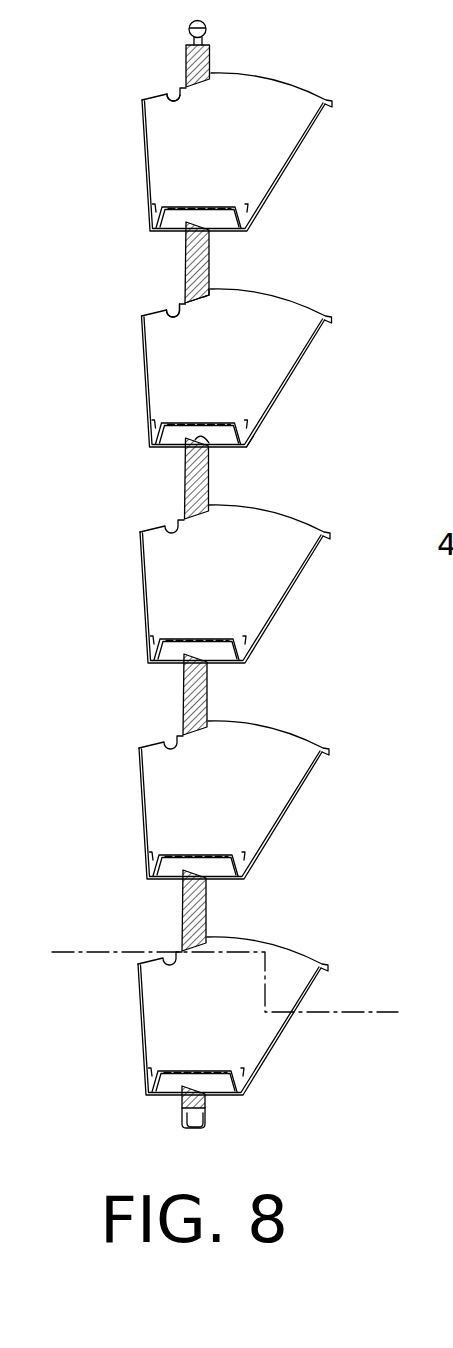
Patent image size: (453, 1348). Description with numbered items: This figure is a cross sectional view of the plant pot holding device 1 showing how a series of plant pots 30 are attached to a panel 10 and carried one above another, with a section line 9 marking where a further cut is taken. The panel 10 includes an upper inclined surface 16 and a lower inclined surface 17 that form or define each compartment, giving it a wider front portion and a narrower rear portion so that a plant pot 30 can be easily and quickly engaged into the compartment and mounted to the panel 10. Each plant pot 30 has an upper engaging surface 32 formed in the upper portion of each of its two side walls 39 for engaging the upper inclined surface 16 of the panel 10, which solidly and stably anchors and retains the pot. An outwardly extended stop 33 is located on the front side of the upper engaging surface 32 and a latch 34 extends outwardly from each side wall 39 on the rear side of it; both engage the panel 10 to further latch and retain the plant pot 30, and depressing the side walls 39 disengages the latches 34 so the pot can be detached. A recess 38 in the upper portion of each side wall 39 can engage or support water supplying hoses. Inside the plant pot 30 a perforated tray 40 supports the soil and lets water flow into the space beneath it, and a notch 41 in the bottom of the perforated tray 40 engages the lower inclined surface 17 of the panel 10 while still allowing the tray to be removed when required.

The stacked container assembly 1 is at (389, 92).
The section line 9- 9 is at (75, 931).
The panel 10 is at (210, 253).
The upper inclined surface 16 is at (198, 301).
The lower inclined surface 17 is at (185, 462).
The plant pot 30 is at (313, 938).
The upper engaging surface 32 is at (197, 301).
The stop 33 is at (214, 290).
The latch 34 is at (188, 318).
The recess 38 is at (172, 96).
The side wall 39 is at (158, 760).
The perforated tray 40 is at (252, 436).
The notch 41 is at (203, 436).